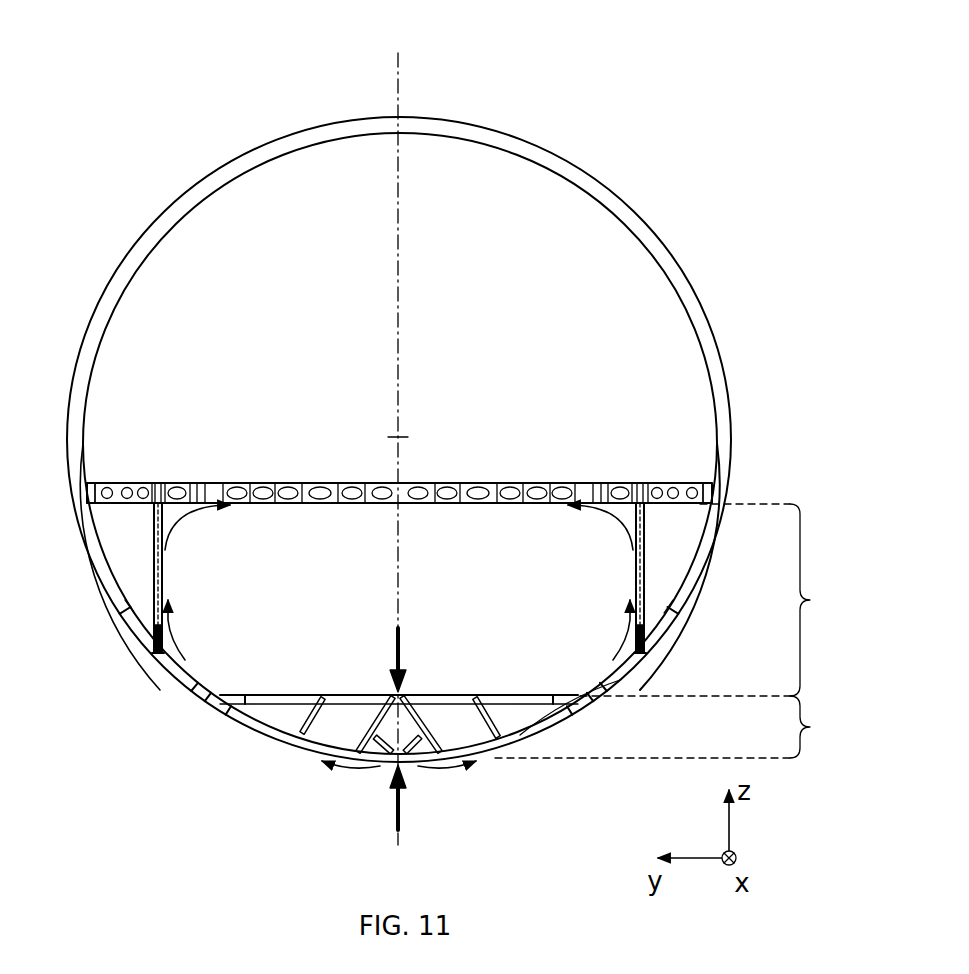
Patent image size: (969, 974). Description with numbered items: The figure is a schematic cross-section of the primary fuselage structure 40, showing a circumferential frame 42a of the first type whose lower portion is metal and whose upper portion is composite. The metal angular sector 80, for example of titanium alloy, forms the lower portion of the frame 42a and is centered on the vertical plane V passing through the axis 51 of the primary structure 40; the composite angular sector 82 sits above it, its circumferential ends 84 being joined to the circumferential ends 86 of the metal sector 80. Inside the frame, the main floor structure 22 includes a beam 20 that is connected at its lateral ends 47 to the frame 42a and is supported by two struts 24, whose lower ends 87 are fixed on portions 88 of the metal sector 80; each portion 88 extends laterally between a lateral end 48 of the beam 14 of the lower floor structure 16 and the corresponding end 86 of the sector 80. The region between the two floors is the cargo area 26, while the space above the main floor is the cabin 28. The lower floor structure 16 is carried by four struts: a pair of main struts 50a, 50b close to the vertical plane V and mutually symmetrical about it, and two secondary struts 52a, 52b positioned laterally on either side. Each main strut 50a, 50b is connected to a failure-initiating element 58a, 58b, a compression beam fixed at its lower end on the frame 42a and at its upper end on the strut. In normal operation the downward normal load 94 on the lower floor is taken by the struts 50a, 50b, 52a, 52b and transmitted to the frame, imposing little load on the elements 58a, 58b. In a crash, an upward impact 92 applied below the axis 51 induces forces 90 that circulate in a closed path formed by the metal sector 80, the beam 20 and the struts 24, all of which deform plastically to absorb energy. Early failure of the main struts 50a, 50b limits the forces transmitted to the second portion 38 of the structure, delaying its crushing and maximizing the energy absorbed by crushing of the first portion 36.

The vertical plane V is at (399, 63).
The primary fuselage structure 40 is at (641, 193).
The composite angular sector 82 is at (533, 150).
The circumferential frame 42a is at (712, 569).
The metal angular sector 80 is at (550, 717).
The passenger cabin region 28 is at (400, 304).
The cargo compartment region 26 is at (400, 566).
The axis 51 is at (400, 433).
The main floor structure 22 is at (280, 480).
The beam 20 is at (475, 505).
The lateral ends 47 is at (96, 482).
The struts 24 is at (163, 568).
The forces 90 is at (175, 525).
The circumferential ends 86 is at (124, 608).
The circumferential ends 84 is at (128, 618).
The lower ends 87 is at (156, 655).
The portions 88 is at (180, 674).
The lower floor structure 16 is at (298, 690).
The beam 14 is at (540, 692).
The lateral ends 48 is at (245, 693).
The main strut 50a is at (368, 716).
The main strut 50b is at (430, 716).
The failure-initiating element 58a is at (385, 757).
The failure-initiating element 58b is at (412, 757).
The secondary strut 52a is at (298, 725).
The secondary strut 52b is at (500, 724).
The normal load 94 is at (404, 644).
The upward-oriented impact 92 is at (393, 822).
The second portion 38 is at (709, 600).
The first portion 36 is at (667, 727).